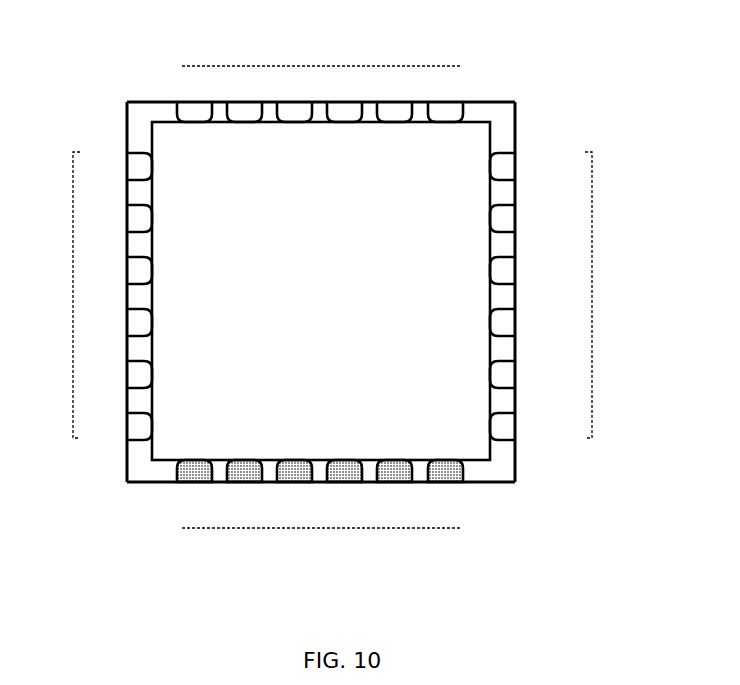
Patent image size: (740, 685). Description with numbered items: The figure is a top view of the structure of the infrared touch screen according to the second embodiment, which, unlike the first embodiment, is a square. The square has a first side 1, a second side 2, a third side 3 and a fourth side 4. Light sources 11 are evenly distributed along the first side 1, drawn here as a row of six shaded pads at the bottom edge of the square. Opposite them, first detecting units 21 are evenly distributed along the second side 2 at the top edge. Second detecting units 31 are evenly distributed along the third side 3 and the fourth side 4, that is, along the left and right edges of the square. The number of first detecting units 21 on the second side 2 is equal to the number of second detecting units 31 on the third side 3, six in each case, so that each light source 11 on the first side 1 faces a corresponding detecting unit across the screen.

The first side 1 is at (150, 482).
The second side 2 is at (497, 100).
The third side 3 is at (127, 122).
The fourth side 4 is at (518, 462).
The light source 11 is at (317, 530).
The first detecting unit 21 is at (315, 65).
The second detecting unit 31 is at (72, 300).